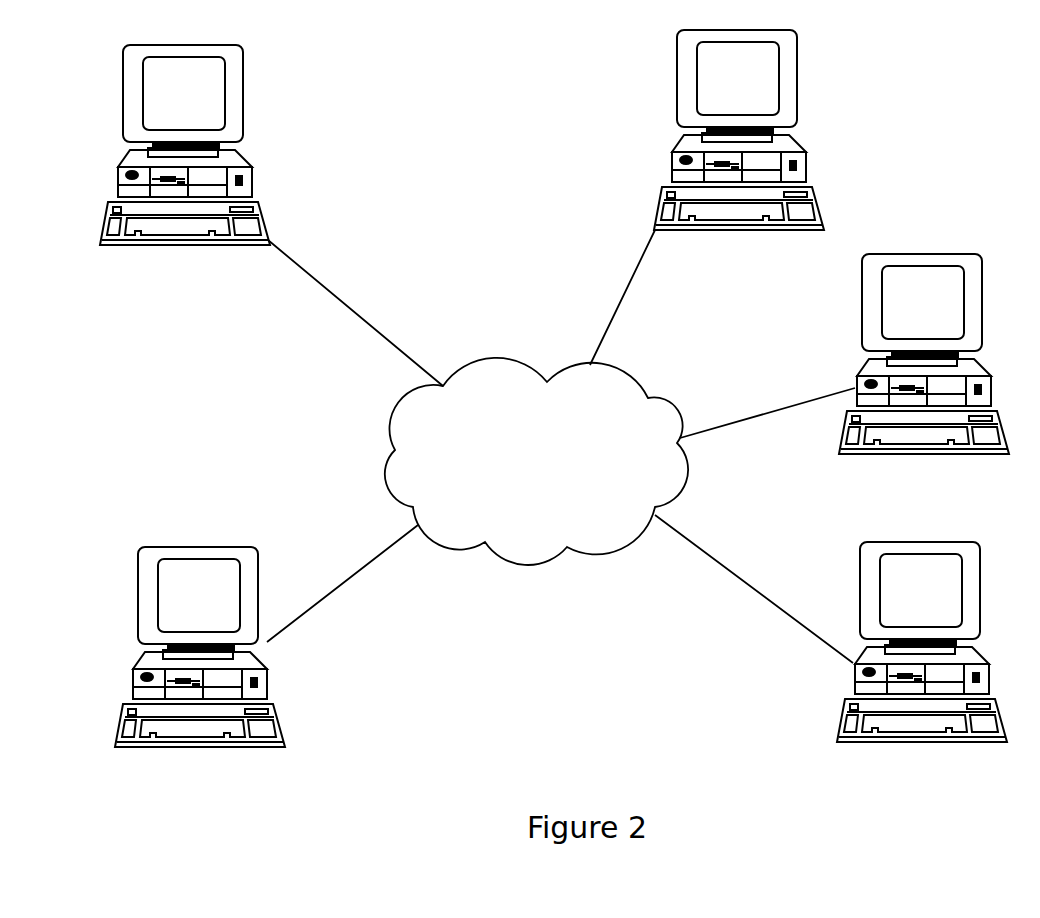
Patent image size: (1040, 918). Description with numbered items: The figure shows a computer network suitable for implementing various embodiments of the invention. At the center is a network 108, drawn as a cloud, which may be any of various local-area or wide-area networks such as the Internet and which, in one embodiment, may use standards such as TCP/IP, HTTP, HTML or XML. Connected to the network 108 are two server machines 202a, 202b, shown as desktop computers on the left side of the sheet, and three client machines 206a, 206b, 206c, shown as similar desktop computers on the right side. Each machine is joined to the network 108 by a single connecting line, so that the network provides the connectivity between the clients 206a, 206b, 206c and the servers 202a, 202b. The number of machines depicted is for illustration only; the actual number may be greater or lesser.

The network 108 is at (519, 486).
The server machine 202a is at (185, 176).
The server machine 202b is at (200, 679).
The client machine 206a is at (739, 161).
The client machine 206b is at (924, 385).
The client machine 206c is at (922, 673).